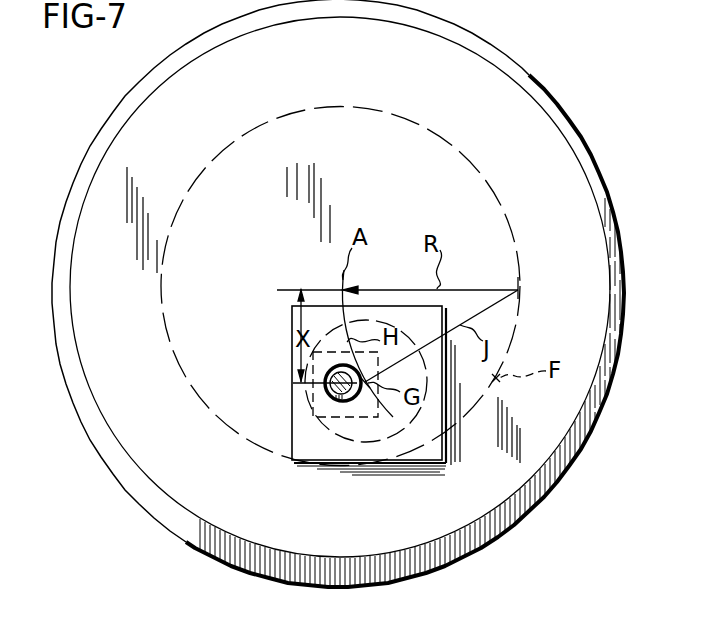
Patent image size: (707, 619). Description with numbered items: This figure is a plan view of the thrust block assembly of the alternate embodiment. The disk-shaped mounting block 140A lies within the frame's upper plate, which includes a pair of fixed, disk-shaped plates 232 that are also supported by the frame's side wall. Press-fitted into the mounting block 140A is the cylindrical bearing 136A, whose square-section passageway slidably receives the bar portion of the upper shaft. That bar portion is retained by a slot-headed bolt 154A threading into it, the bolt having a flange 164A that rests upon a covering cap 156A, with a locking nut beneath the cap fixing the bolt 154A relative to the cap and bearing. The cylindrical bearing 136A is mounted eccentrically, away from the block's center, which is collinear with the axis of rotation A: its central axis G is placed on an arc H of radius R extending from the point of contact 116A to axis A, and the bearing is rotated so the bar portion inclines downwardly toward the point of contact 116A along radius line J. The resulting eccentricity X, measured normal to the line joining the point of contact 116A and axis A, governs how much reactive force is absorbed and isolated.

The fixed disk-shaped plates 232 is at (544, 78).
The mounting block 140A is at (550, 150).
The point of contact 116A is at (518, 285).
The covering cap 156A is at (293, 312).
The slot-headed bolt 154A is at (327, 388).
The cylindrical bearing 136A is at (300, 428).
The flange 164A is at (332, 403).